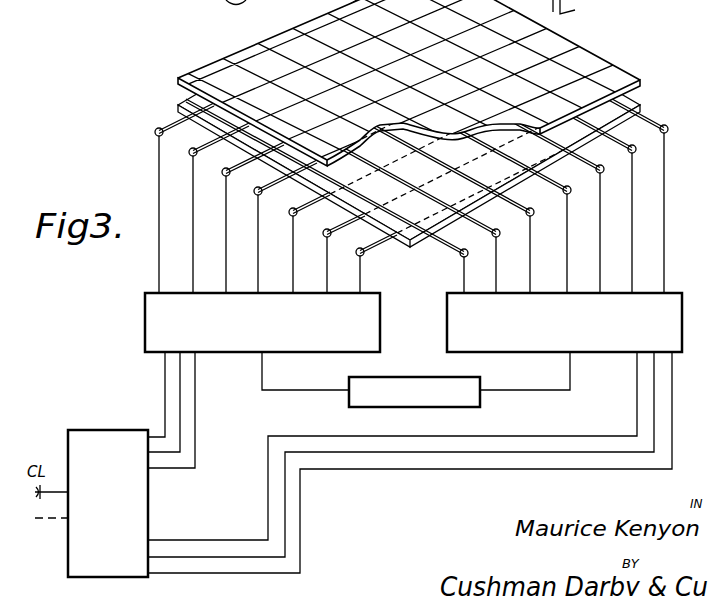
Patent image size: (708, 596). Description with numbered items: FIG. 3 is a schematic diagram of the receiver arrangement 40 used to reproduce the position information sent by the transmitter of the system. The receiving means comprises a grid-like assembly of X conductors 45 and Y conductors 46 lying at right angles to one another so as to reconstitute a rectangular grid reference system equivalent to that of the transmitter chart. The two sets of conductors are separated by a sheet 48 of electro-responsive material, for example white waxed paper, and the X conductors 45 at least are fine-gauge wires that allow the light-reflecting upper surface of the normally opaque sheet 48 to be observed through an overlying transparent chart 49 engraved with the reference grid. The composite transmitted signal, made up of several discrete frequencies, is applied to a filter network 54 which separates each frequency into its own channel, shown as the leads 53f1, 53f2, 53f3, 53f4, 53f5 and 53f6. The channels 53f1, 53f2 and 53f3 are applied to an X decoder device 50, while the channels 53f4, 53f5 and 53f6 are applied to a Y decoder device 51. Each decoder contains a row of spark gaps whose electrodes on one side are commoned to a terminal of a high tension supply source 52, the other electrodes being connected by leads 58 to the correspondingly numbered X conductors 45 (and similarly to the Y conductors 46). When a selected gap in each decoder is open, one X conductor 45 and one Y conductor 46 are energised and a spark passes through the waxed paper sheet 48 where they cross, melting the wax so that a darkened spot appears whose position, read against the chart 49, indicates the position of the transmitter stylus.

The display panel assembly 40 is at (354, 156).
The X conductors 45 is at (161, 140).
The Y conductors 46 is at (396, 140).
The sheet of electro-responsive material 48 is at (627, 102).
The transparent chart 49 is at (215, 65).
The X decoder device 50 is at (447, 302).
The Y decoder device 51 is at (378, 340).
The high tension supply source 52 is at (480, 407).
The lead 53f1 is at (345, 469).
The lead 53f2 is at (422, 452).
The lead 53f3 is at (500, 436).
The lead 53f4 is at (165, 470).
The lead 53f5 is at (180, 452).
The lead 53f6 is at (165, 397).
The filter network 54 is at (103, 442).
The leads 58 is at (194, 267).